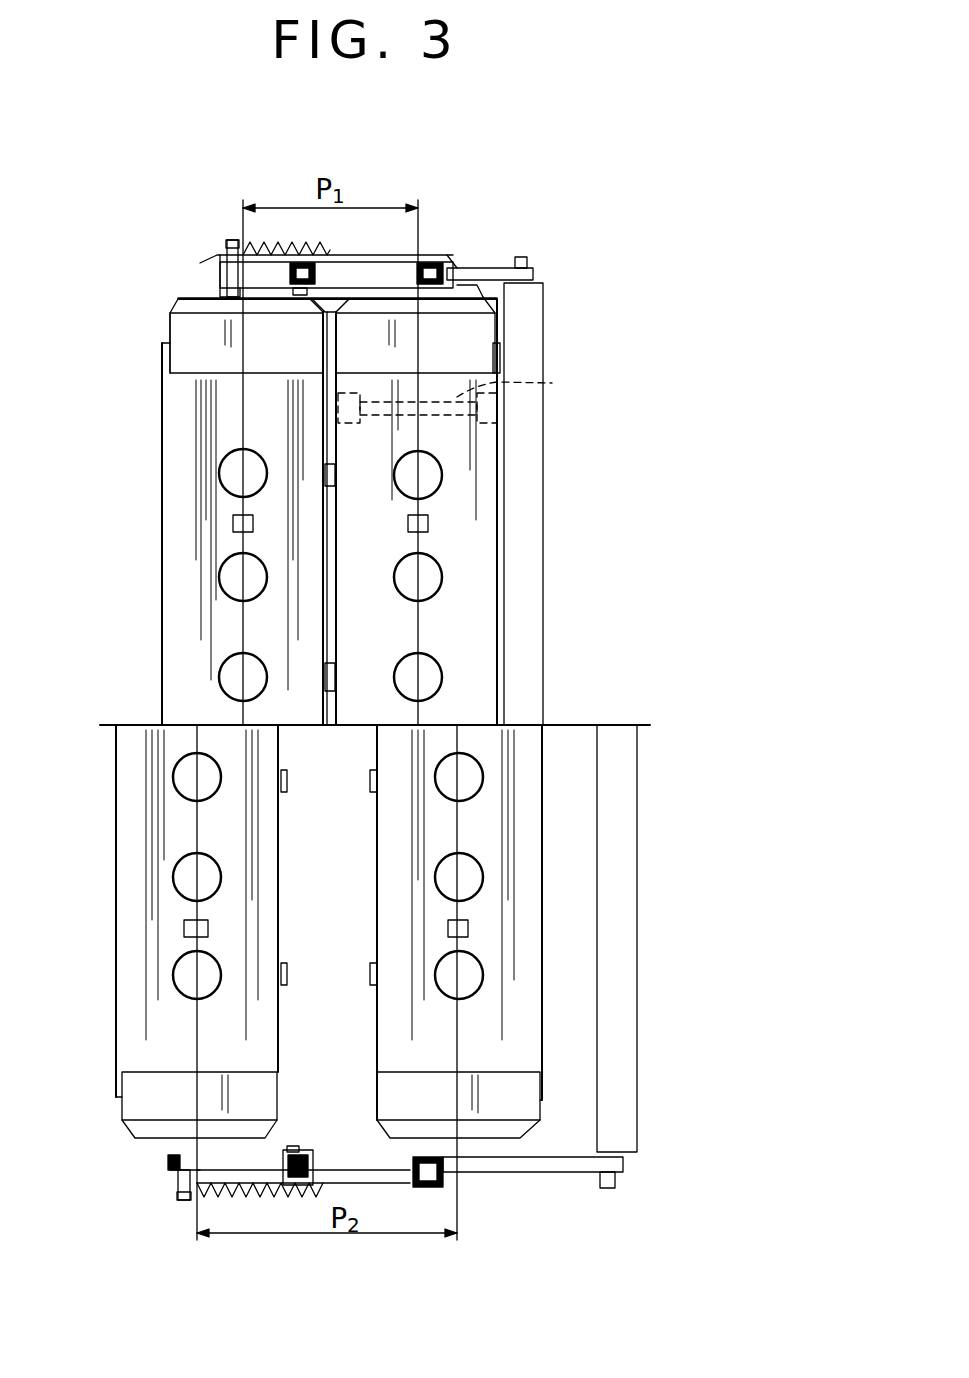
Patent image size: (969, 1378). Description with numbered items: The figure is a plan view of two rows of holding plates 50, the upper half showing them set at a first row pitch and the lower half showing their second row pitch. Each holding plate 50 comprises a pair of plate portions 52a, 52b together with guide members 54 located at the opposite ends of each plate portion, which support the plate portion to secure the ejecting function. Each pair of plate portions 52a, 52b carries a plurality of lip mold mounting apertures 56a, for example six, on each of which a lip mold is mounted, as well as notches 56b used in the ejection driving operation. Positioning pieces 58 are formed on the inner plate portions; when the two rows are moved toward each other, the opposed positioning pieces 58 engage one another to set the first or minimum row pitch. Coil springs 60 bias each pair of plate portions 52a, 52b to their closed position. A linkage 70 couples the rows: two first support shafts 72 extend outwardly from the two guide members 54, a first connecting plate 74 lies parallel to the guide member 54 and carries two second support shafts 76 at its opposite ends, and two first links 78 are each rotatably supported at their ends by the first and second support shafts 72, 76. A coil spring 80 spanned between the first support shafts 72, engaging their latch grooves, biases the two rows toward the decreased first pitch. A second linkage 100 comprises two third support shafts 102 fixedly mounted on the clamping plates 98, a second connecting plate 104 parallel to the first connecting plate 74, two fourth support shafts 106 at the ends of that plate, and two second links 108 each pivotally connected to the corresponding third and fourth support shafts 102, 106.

The holding plate 50 is at (160, 520).
The plate portion 52a is at (480, 610).
The plate portion 52b is at (405, 640).
The guide member 54 is at (182, 333).
The lip mold mounting aperture 56a is at (440, 480).
The notch 56b is at (430, 525).
The positioning piece 58 is at (325, 470).
The coil spring 60 is at (467, 394).
The linkage 70 is at (175, 232).
The first support shaft 72 is at (300, 297).
The first connecting plate 74 is at (325, 272).
The second support shaft 76 is at (232, 243).
The first link 78 is at (215, 272).
The coil spring 80 is at (282, 243).
The clamping plate 98 is at (528, 302).
The linkage 100 is at (510, 222).
The third support shaft 102 is at (527, 260).
The second connecting plate 104 is at (385, 262).
The fourth support shaft 106 is at (437, 255).
The second link 108 is at (490, 267).